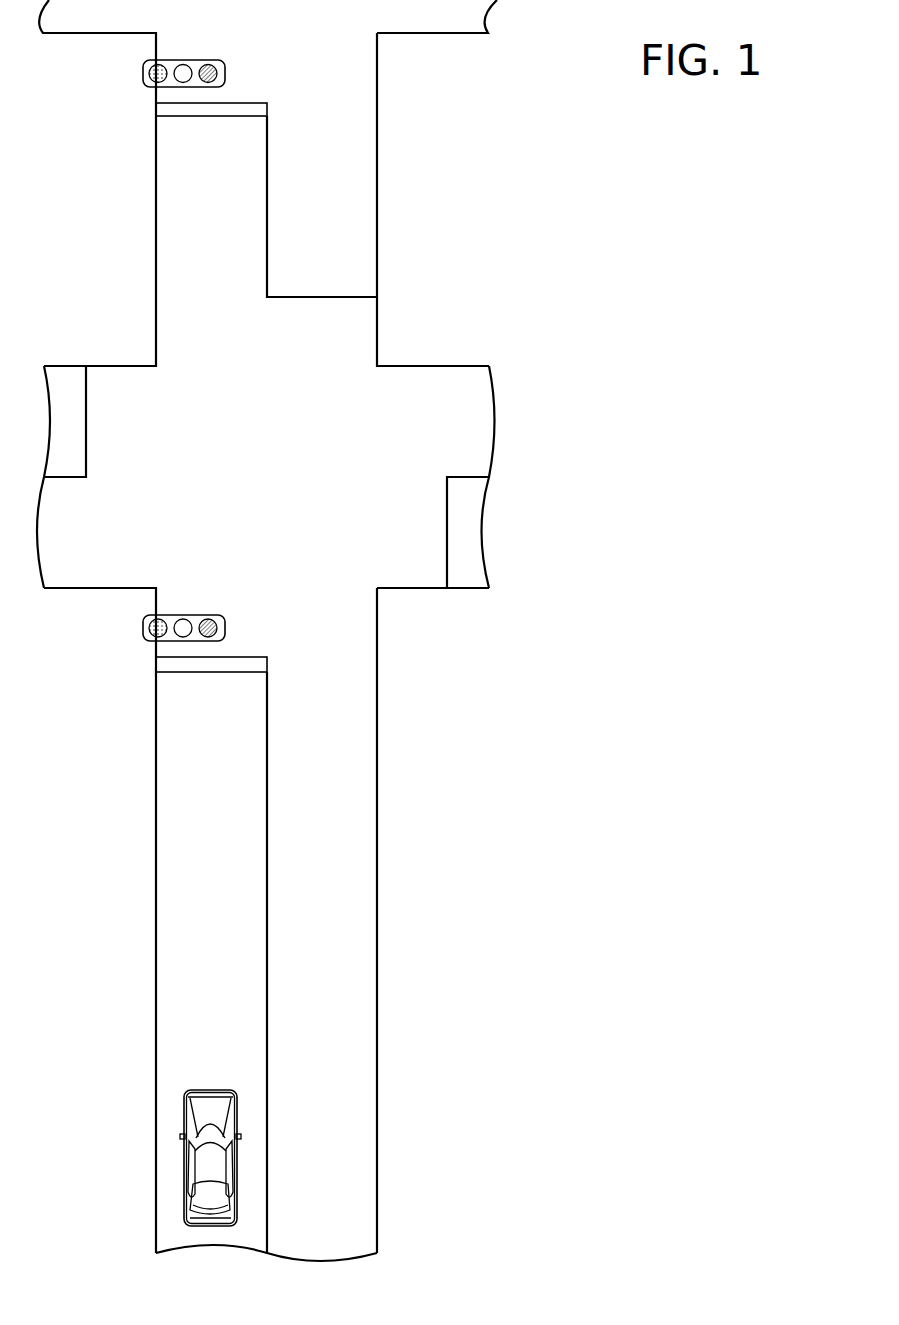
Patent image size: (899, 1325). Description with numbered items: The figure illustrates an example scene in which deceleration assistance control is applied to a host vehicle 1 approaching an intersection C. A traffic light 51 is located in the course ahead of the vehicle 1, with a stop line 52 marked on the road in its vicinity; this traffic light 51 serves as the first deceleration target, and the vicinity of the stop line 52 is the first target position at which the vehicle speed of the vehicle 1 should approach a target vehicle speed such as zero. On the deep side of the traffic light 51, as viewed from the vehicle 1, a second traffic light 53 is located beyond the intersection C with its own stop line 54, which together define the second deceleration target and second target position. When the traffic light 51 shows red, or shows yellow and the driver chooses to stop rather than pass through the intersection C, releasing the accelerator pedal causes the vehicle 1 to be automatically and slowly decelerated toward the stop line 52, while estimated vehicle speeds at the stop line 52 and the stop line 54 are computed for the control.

The vehicle 1 is at (195, 1156).
The traffic light 51 is at (143, 627).
The stop line 52 is at (163, 664).
The traffic light 53 is at (143, 72).
The stop line 54 is at (163, 108).
The intersection C is at (170, 393).